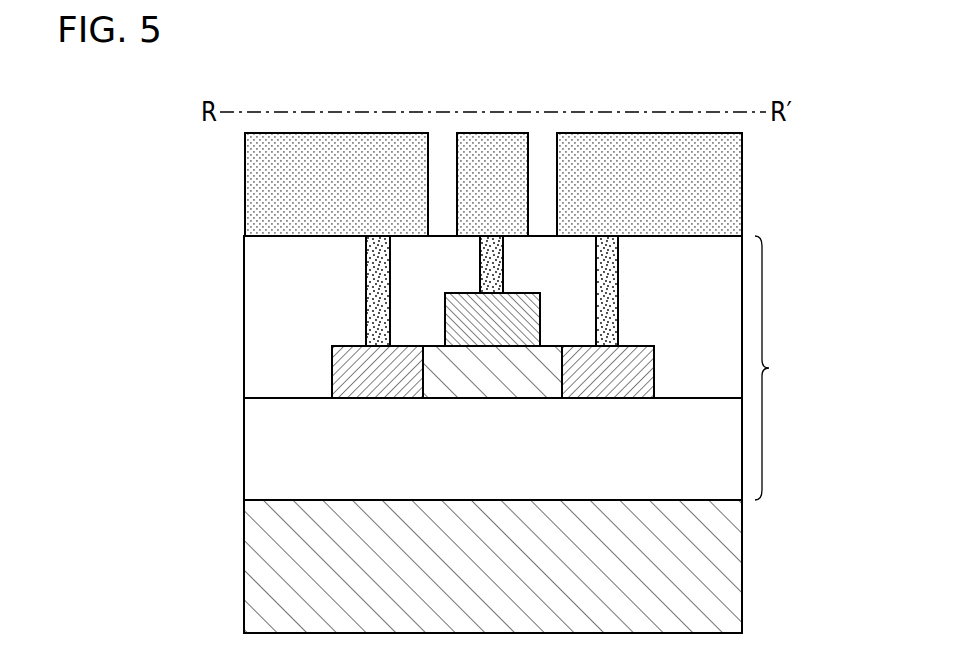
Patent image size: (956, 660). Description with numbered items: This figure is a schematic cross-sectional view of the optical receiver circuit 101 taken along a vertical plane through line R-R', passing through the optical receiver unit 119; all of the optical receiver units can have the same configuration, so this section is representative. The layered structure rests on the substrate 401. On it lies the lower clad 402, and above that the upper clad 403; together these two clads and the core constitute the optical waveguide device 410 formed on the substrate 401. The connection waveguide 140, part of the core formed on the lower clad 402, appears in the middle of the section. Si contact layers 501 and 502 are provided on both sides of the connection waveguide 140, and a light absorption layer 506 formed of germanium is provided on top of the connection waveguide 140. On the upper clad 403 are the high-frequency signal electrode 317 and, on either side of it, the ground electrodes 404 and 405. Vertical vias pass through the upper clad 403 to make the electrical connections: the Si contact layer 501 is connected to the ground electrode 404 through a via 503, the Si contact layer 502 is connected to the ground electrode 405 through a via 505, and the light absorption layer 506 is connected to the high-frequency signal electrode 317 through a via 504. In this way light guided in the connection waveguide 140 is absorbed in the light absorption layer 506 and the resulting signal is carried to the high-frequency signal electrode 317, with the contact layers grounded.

The optical receiver circuit 101 is at (243, 268).
The optical receiver unit 119 is at (443, 318).
The connection waveguide 140 is at (515, 385).
The high-frequency signal electrode 317 is at (515, 198).
The substrate 401 is at (516, 581).
The lower clad 402 is at (516, 463).
The upper clad 403 is at (726, 305).
The ground electrode 404 is at (359, 198).
The ground electrode 405 is at (672, 198).
The optical waveguide device 410 is at (789, 368).
The Si contact layer 501 is at (400, 385).
The Si contact layer 502 is at (631, 385).
The via 503 is at (366, 265).
The via 504 is at (480, 265).
The via 505 is at (596, 264).
The light absorption layer 506 is at (515, 333).